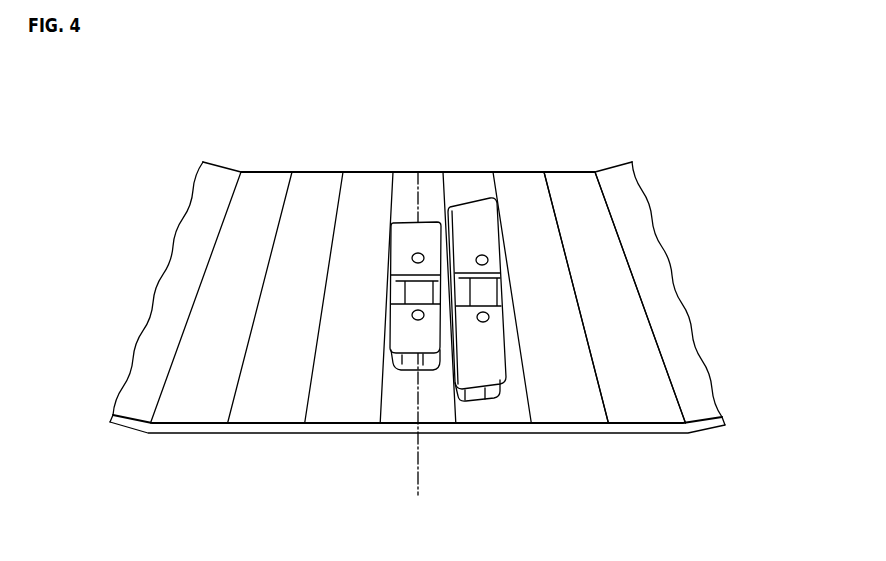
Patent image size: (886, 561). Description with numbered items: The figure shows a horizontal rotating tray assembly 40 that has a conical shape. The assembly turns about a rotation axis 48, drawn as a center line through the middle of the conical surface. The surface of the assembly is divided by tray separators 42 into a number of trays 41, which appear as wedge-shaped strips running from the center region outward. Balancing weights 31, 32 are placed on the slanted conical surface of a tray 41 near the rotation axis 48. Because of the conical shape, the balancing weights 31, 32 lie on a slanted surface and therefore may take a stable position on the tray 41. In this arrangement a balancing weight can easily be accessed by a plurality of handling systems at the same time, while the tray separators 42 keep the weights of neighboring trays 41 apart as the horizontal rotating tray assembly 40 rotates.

The balancing weight 31 is at (402, 243).
The balancing weight 32 is at (492, 231).
The horizontal rotating tray assembly 40 is at (441, 270).
The tray 41 is at (683, 360).
The tray separator 42 is at (501, 178).
The rotation axis 48 is at (420, 485).